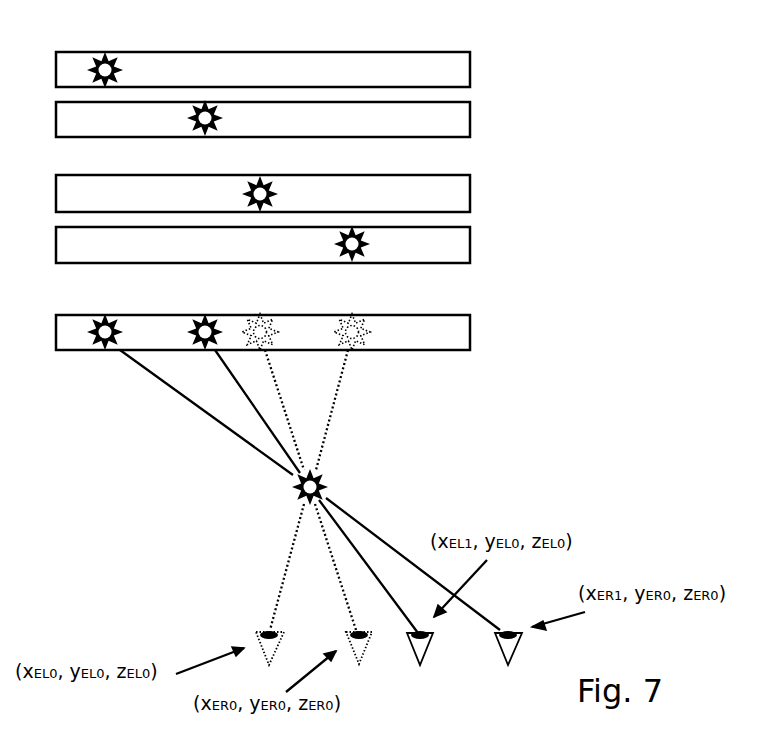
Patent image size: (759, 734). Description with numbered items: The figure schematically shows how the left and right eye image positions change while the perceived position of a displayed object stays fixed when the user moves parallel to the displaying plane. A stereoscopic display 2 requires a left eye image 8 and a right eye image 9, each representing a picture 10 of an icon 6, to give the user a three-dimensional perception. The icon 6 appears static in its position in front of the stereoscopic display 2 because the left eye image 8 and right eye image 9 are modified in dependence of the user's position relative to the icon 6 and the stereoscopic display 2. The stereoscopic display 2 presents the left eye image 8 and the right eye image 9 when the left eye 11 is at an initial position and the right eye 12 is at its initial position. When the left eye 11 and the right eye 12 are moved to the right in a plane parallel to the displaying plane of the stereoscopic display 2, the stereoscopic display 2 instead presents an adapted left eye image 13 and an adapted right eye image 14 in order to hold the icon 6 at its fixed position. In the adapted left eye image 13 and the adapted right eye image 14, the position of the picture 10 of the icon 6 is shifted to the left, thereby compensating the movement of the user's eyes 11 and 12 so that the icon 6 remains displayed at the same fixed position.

The stereoscopic display 2 is at (472, 329).
The icon 6 is at (295, 486).
The left eye image 8 is at (472, 240).
The right eye image 9 is at (472, 192).
The picture of the icon 10 is at (110, 64).
The left eye 11 is at (261, 641).
The right eye 12 is at (351, 646).
The adapted left eye image 13 is at (472, 117).
The adapted right eye image 14 is at (472, 67).